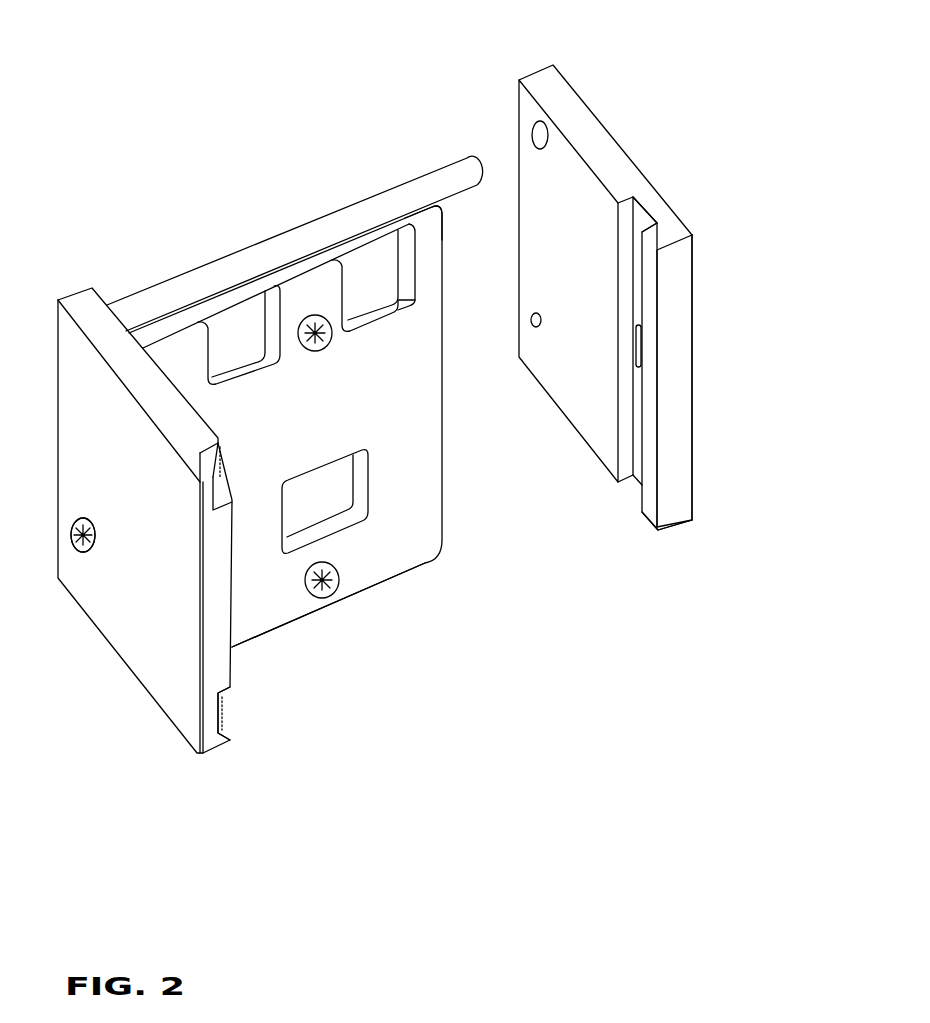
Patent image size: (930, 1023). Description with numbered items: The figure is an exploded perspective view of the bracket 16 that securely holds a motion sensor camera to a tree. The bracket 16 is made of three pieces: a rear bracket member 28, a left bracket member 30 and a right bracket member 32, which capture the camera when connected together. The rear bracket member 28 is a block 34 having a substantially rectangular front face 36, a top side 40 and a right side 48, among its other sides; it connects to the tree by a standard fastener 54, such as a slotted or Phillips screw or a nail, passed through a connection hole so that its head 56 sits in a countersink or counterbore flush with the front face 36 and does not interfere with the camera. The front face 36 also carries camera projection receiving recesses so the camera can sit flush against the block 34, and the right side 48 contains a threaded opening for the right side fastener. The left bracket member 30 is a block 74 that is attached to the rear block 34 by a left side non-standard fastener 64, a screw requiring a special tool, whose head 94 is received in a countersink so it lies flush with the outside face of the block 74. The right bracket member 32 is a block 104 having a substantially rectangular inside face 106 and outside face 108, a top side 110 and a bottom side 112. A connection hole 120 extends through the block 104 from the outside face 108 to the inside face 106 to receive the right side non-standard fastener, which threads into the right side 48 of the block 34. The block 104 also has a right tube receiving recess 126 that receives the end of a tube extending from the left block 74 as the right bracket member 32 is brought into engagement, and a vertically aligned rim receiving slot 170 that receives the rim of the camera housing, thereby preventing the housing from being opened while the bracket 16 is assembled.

The bracket 16 is at (241, 221).
The rear bracket member 28 is at (329, 446).
The left bracket member 30 is at (151, 498).
The right bracket member 32 is at (608, 318).
The block 34 is at (420, 574).
The front face 36 is at (422, 447).
The top side 40 is at (158, 328).
The right side 48 is at (440, 360).
The standard fastener 54 is at (334, 346).
The head 56 is at (311, 338).
The left side non-standard fastener 64 is at (72, 535).
The block 74 is at (119, 666).
The head 94 is at (77, 520).
The block 104 is at (652, 173).
The inside face 106 is at (594, 412).
The outside face 108 is at (697, 346).
The top side 110 is at (598, 132).
The bottom side 112 is at (675, 532).
The connection hole 120 is at (532, 316).
The right tube receiving recess 126 is at (533, 131).
The vertically aligned rim receiving slot 170 is at (660, 215).